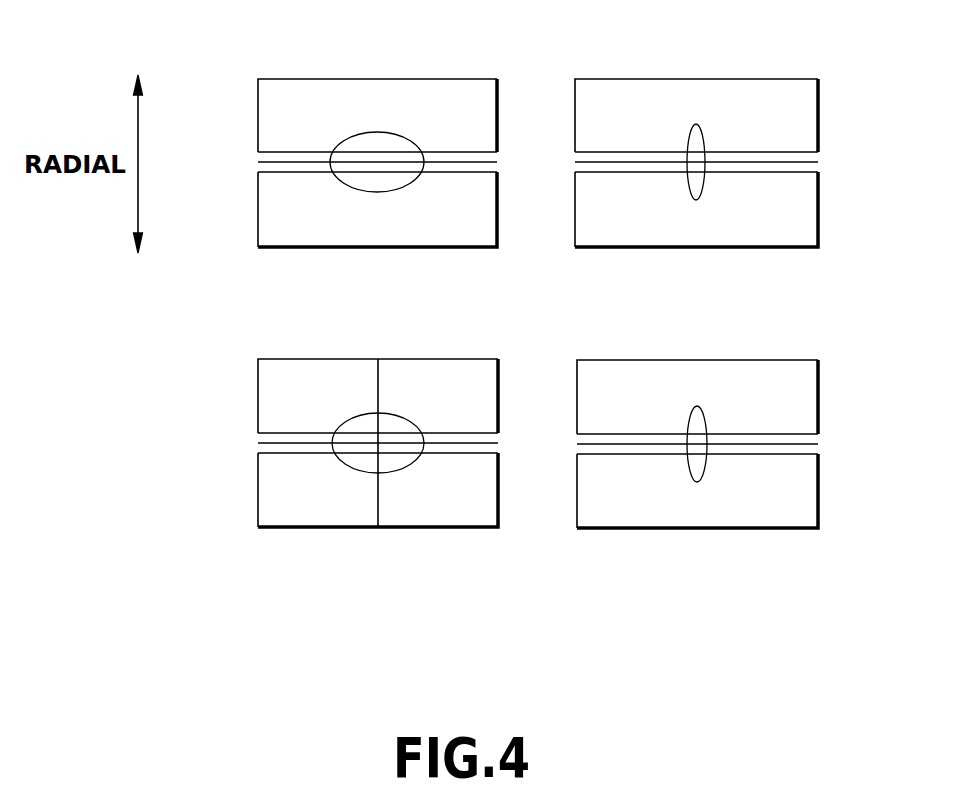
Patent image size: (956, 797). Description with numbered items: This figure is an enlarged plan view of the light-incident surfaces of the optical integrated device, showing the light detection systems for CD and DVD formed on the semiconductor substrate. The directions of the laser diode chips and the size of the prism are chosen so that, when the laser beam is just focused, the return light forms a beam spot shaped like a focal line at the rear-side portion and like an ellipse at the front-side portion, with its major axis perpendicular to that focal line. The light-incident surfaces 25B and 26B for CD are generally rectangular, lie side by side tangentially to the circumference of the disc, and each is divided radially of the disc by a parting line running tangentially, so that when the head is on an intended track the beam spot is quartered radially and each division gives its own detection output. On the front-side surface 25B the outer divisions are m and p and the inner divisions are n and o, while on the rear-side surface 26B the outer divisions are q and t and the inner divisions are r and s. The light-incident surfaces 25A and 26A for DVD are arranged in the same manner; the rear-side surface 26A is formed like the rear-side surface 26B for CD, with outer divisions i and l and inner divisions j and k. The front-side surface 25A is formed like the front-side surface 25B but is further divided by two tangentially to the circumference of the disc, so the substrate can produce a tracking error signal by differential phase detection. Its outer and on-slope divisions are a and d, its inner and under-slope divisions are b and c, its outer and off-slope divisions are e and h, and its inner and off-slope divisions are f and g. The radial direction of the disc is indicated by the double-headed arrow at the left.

The light-incident surface 25A is at (346, 513).
The light-incident surface 25B is at (367, 85).
The light-incident surface 26A is at (646, 515).
The light-incident surface 26B is at (686, 85).
The outer on-slope light-incident surface division a is at (318, 490).
The inner under-slope light-incident surface division b is at (258, 450).
The inner under-slope light-incident surface division c is at (258, 436).
The outer on-slope light-incident surface division d is at (318, 396).
The outer off-slope light-incident surface division e is at (438, 490).
The inner off-slope light-incident surface division f is at (498, 450).
The inner off-slope light-incident surface division g is at (498, 436).
The outer off-slope light-incident surface division h is at (438, 396).
The outer light-incident surface division i is at (697, 491).
The inner light-incident surface division j is at (818, 450).
The inner light-incident surface division k is at (818, 437).
The outer light-incident surface division l is at (697, 397).
The outer light-incident surface division m is at (377, 209).
The inner light-incident surface division n is at (258, 170).
The inner light-incident surface division o is at (258, 153).
The outer light-incident surface division p is at (377, 115).
The outer light-incident surface division q is at (696, 209).
The inner light-incident surface division r is at (818, 168).
The inner light-incident surface division s is at (818, 155).
The outer light-incident surface division t is at (696, 115).